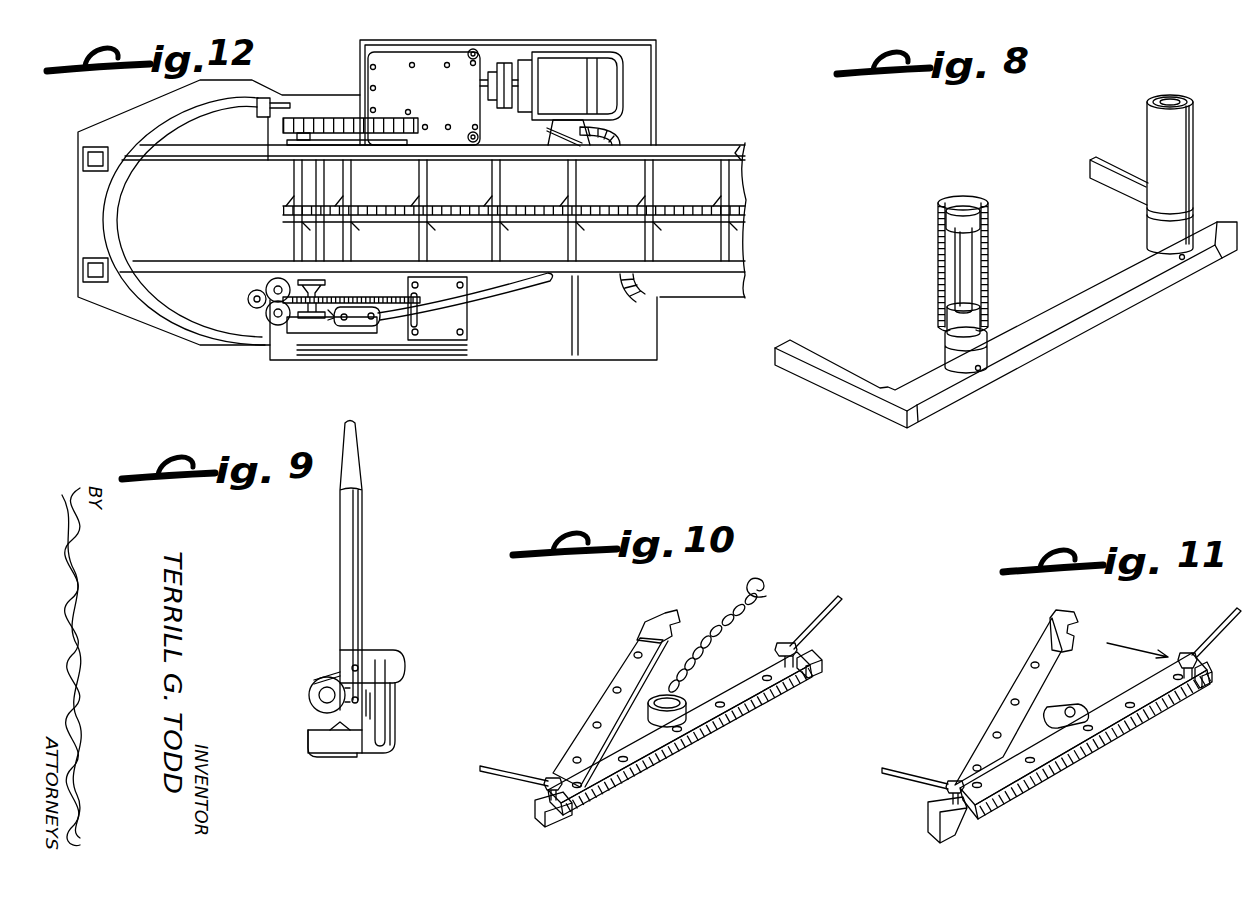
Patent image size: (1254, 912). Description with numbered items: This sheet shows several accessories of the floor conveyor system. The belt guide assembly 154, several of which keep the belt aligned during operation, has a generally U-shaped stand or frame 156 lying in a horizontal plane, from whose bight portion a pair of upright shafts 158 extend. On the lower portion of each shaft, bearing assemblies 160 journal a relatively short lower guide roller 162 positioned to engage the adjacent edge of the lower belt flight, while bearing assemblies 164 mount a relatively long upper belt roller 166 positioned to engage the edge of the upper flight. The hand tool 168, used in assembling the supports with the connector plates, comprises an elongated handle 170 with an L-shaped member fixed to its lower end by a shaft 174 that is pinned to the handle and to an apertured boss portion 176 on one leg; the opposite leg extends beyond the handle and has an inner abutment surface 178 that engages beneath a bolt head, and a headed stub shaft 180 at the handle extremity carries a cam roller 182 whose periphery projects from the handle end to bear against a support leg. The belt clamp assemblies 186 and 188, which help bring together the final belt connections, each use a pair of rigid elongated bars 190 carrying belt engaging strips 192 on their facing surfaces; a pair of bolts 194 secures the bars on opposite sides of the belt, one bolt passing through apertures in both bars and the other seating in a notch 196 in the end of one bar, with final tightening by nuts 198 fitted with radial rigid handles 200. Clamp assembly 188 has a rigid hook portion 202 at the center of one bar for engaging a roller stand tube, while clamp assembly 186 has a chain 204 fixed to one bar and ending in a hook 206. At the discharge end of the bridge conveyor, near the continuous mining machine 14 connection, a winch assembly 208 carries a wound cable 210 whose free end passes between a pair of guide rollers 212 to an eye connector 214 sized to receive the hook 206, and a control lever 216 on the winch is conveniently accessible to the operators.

In FIG. 12, the continuous mining machine 14 is at (704, 118).
In FIG. 8, the belt guide assembly 154 is at (1108, 331).
In FIG. 8, the U-shaped stand or frame 156 is at (1055, 330).
In FIG. 8, the shaft 158 is at (1177, 86).
In FIG. 8, the bearing assembly 160 is at (957, 350).
In FIG. 8, the lower guide roller 162 is at (1160, 224).
In FIG. 8, the bearing assembly 164 is at (942, 240).
In FIG. 8, the upper belt roller 166 is at (1160, 142).
In FIG. 9, the hand tool 168 is at (394, 455).
In FIG. 9, the handle 170 is at (362, 543).
In FIG. 9, the shaft 174 is at (415, 633).
In FIG. 9, the apertured boss portion 176 is at (403, 682).
In FIG. 9, the inner abutment surface 178 is at (352, 752).
In FIG. 9, the headed stub shaft 180 is at (316, 697).
In FIG. 9, the cam roller 182 is at (324, 676).
In FIG. 10, the belt clamp assembly 186 is at (677, 785).
In FIG. 11, the belt clamp assembly 188 is at (1112, 767).
In FIG. 10, the rigid elongated bar 190 is at (650, 632).
In FIG. 11, the rigid elongated bar 190 is at (1077, 623).
In FIG. 10, the belt engaging strip 192 is at (630, 743).
In FIG. 11, the belt engaging strip 192 is at (1132, 690).
In FIG. 10, the bolt 194 is at (808, 658).
In FIG. 11, the bolt 194 is at (1200, 690).
In FIG. 10, the notch 196 is at (683, 630).
In FIG. 11, the notch 196 is at (1050, 628).
In FIG. 10, the nut 198 is at (792, 633).
In FIG. 11, the nut 198 is at (1190, 652).
In FIG. 10, the rigid handle 200 is at (840, 600).
In FIG. 11, the rigid handle 200 is at (1235, 608).
In FIG. 11, the rigid hook portion 202 is at (1047, 712).
In FIG. 10, the chain 204 is at (700, 652).
In FIG. 10, the hook 206 is at (770, 584).
In FIG. 12, the winch assembly 208 is at (486, 316).
In FIG. 12, the cable 210 is at (363, 297).
In FIG. 12, the guide roller 212 is at (279, 278).
In FIG. 12, the eye connector 214 is at (248, 298).
In FIG. 12, the control lever 216 is at (548, 283).